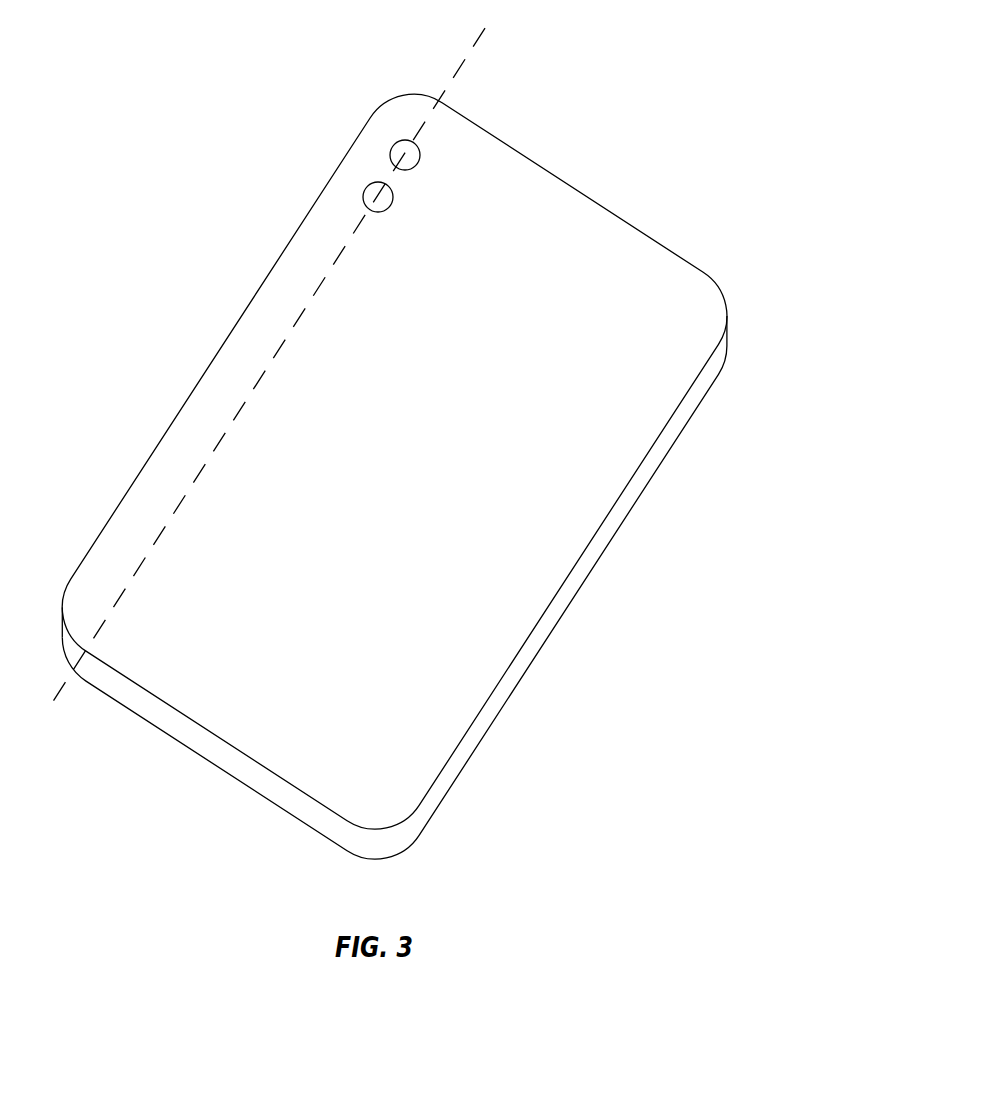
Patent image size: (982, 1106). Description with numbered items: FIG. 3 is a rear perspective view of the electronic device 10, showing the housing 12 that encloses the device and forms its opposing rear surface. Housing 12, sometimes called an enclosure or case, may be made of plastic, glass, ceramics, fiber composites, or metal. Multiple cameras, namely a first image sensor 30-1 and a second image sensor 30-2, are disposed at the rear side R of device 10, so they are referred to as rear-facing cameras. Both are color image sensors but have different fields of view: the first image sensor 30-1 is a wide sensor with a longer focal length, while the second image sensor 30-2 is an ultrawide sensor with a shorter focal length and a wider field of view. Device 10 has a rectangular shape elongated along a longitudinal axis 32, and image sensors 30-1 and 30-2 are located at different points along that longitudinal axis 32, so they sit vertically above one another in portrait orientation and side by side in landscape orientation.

The electronic device 10 is at (626, 95).
The housing 12 is at (670, 428).
The first image sensor 30-1 is at (402, 139).
The second image sensor 30-2 is at (370, 181).
The longitudinal axis 32 is at (467, 63).
The rear side R is at (303, 408).